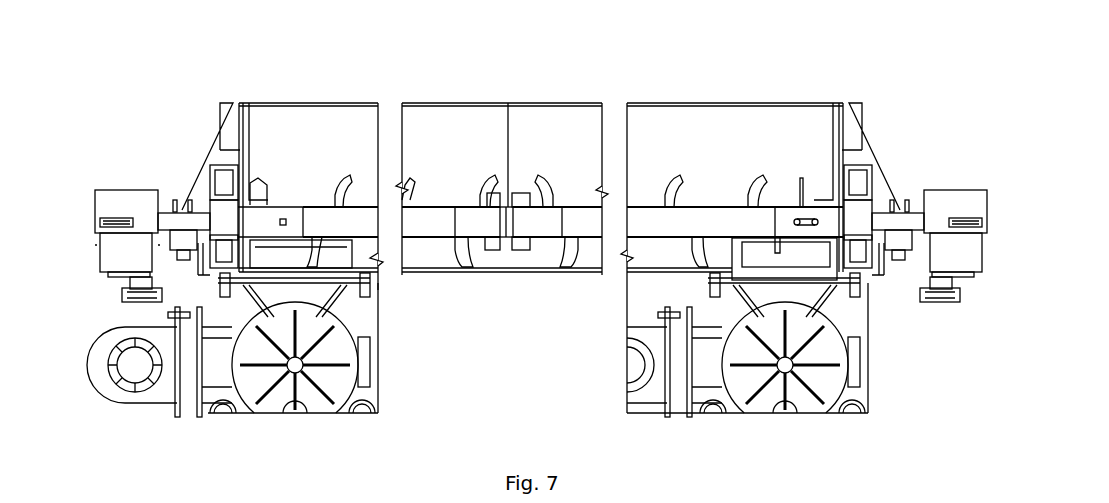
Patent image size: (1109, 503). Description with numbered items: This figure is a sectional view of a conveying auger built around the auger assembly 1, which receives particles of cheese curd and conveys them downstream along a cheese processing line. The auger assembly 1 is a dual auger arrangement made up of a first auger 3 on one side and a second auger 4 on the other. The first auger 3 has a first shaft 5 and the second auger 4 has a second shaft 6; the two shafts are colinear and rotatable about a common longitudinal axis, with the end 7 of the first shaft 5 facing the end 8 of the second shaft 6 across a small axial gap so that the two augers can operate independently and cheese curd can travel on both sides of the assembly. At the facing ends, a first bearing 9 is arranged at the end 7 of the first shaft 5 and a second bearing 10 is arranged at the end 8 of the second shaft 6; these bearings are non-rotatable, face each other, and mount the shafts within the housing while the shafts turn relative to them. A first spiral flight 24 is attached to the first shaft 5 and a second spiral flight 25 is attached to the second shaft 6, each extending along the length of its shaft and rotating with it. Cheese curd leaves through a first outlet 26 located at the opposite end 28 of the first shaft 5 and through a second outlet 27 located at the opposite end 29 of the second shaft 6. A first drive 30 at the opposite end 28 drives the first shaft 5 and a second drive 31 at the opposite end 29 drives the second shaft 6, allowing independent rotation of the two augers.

The auger assembly 1 is at (484, 160).
The first auger 3 is at (148, 175).
The second auger 4 is at (878, 334).
The first shaft 5 is at (322, 227).
The second shaft 6 is at (700, 205).
The end of first shaft 7 is at (500, 222).
The end of second shaft 8 is at (527, 222).
The first bearing 9 is at (462, 252).
The second bearing 10 is at (518, 252).
The first spiral flight 24 is at (512, 194).
The second spiral flight 25 is at (515, 212).
The first outlet 26 is at (322, 305).
The second outlet 27 is at (811, 289).
The opposite end of first shaft 28 is at (274, 212).
The opposite end of second shaft 29 is at (826, 203).
The first drive 30 is at (118, 198).
The second drive 31 is at (944, 193).